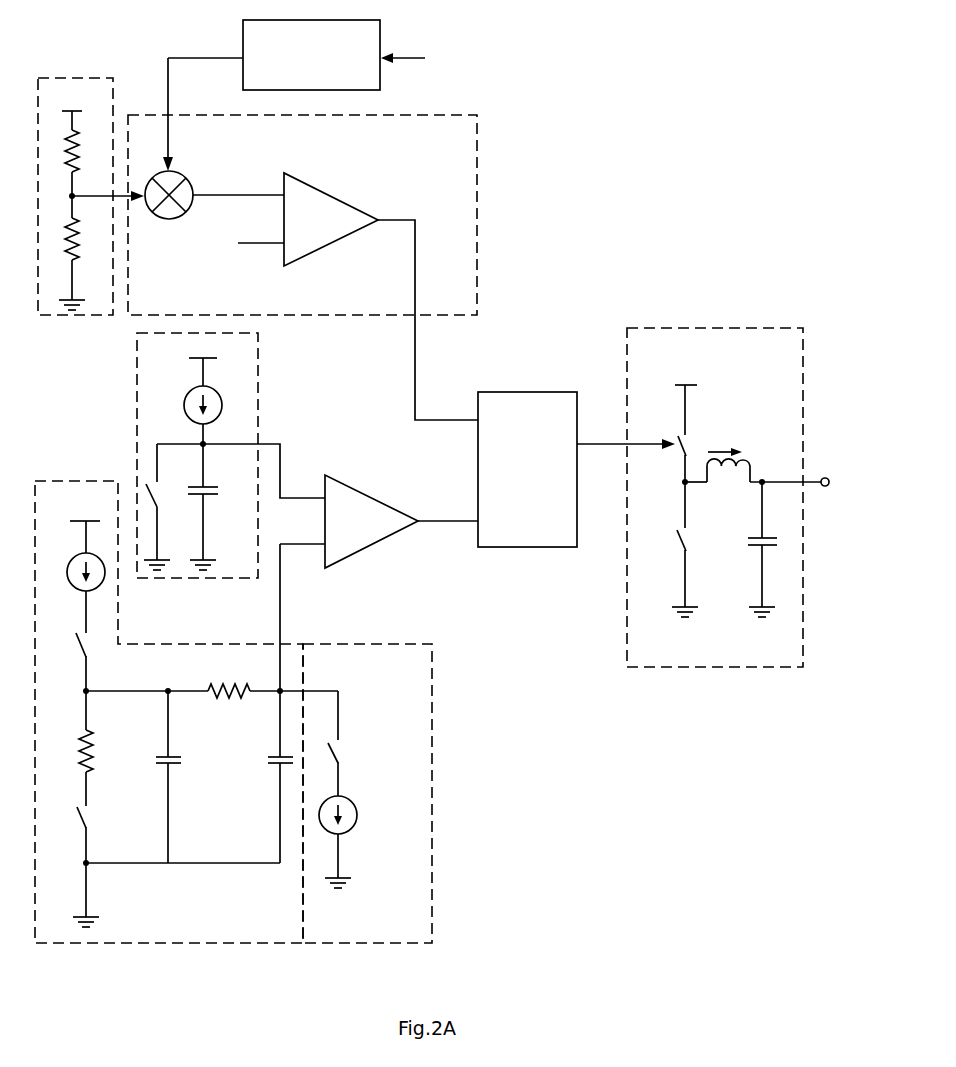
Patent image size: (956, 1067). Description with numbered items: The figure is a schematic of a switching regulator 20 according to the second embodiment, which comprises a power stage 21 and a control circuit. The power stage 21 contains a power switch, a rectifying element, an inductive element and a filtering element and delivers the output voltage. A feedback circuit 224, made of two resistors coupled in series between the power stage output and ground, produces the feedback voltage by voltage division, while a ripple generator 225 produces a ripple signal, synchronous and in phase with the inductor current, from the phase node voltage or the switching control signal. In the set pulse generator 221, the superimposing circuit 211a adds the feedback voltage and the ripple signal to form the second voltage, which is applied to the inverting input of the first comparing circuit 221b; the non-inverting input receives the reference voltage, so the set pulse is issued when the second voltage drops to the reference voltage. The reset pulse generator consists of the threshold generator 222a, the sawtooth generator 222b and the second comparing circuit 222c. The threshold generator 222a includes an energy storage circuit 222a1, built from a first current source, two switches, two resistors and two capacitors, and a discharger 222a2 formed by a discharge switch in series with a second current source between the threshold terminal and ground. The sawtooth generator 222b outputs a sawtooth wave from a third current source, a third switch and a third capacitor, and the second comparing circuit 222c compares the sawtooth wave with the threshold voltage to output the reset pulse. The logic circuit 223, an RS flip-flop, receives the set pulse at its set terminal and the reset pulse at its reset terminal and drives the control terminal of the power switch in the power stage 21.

The switching regulator 20 is at (709, 51).
The power stage 21 is at (677, 328).
The feedback circuit 224 is at (82, 79).
The ripple generator 225 is at (328, 66).
The set pulse generator 221 is at (477, 145).
The superimposing circuit 211a is at (183, 173).
The first comparing circuit 221b is at (350, 230).
The sawtooth generator 222b is at (258, 333).
The second comparing circuit 222c is at (390, 531).
The logic circuit 223 is at (520, 392).
The threshold generator 222a is at (432, 740).
The energy storage circuit 222a1 is at (244, 936).
The discharger 222a2 is at (424, 936).